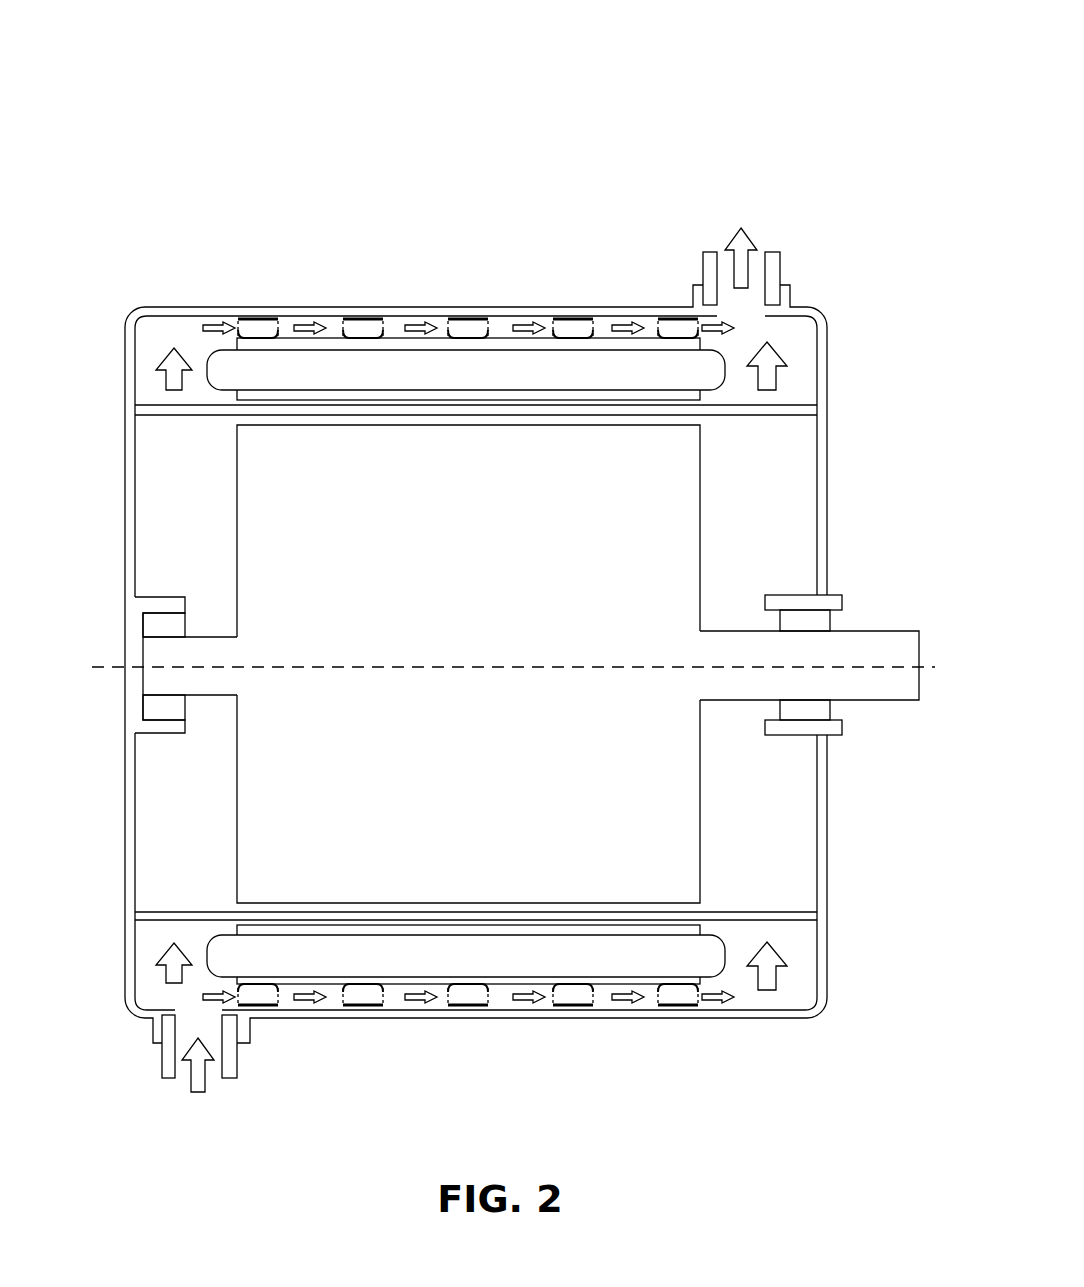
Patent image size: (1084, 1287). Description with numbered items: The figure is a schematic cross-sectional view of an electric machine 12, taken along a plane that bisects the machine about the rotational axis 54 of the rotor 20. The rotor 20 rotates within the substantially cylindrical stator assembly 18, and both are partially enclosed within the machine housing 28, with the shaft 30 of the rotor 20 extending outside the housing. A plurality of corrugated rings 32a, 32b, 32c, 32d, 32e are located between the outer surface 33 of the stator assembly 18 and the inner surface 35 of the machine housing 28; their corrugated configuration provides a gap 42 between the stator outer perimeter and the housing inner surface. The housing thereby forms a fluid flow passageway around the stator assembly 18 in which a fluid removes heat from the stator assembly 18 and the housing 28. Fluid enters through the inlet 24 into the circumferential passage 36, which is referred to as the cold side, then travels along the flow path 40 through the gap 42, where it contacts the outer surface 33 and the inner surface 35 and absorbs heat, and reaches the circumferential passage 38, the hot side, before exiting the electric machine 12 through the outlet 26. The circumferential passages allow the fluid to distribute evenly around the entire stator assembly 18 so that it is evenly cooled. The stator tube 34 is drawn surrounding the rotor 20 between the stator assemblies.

The electric machine 12 is at (790, 78).
The stator assembly 18 is at (537, 965).
The rotor 20 is at (492, 602).
The inlet 24 is at (200, 1078).
The outlet 26 is at (740, 245).
The machine housing 28 is at (773, 1018).
The shaft 30 is at (865, 642).
The corrugated ring 32a is at (258, 328).
The corrugated ring 32b is at (350, 328).
The corrugated ring 32c is at (468, 328).
The corrugated ring 32d is at (574, 328).
The corrugated ring 32e is at (680, 328).
The outer surface of stator assembly 33 is at (390, 322).
The stator tube 34 is at (753, 417).
The inner surface of machine housing 35 is at (532, 312).
The circumferential passage 36 is at (150, 334).
The circumferential passage 38 is at (805, 352).
The flow path 40 is at (413, 1003).
The gap 42 is at (503, 1000).
The rotational axis 54 is at (526, 666).